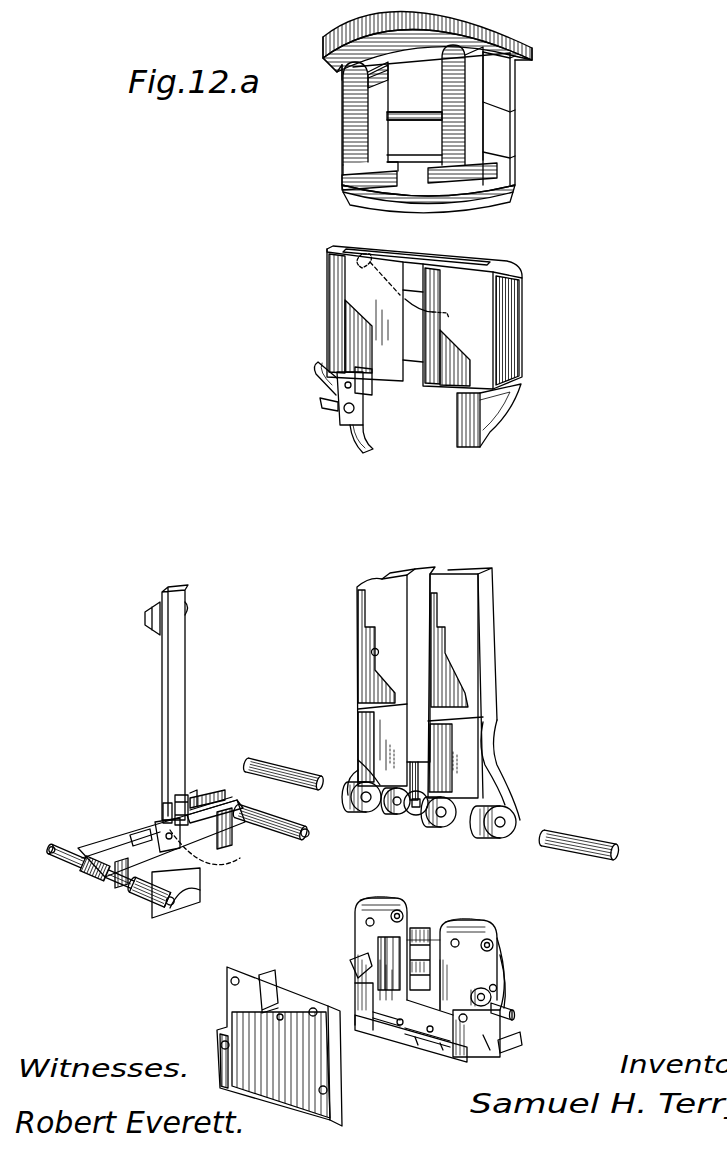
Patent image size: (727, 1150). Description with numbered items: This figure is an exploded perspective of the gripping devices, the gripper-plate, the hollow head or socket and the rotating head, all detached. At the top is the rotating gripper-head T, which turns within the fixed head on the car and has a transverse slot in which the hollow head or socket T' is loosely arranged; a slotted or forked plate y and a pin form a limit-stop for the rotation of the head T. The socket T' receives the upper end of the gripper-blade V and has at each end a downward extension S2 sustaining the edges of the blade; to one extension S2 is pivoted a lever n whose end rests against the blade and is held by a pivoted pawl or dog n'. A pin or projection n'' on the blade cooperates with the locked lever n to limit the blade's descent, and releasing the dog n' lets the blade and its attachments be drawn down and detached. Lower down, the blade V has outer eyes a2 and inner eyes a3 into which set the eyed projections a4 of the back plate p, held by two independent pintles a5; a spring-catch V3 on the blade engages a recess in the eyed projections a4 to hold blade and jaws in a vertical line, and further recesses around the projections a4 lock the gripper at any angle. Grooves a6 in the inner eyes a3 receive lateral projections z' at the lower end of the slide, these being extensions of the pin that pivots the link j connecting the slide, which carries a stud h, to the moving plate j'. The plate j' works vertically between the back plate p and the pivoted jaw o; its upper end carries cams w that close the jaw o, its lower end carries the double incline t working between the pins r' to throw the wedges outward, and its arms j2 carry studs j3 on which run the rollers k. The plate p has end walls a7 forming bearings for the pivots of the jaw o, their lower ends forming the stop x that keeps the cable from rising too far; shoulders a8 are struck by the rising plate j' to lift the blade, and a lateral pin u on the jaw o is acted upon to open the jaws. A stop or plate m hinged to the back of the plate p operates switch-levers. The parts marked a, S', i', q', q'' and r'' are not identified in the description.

The rotating gripper-head T is at (438, 112).
The ring of cap a is at (336, 62).
The rib of cap S' is at (408, 117).
The hollow head or socket T' is at (441, 317).
The lever n is at (328, 407).
The pivoted pawl or dog n' is at (402, 326).
The downward extension S2 is at (320, 401).
The gripper-blade V is at (494, 636).
The pin or projection n'' is at (350, 651).
The stop or spring-catch V3 is at (382, 786).
The outer eyes a2 is at (354, 790).
The inner eyes a3 is at (395, 815).
The grooves a6 is at (416, 815).
The pintles a5 is at (430, 799).
The vertical bar i' is at (181, 702).
The stud h is at (145, 615).
The link j is at (161, 838).
The lateral projections z' is at (166, 788).
The slotted or forked plate y is at (240, 803).
The moving plate j' is at (168, 843).
The arm j2 is at (128, 880).
The journal or stud j3 is at (315, 836).
The rollers or wheels k is at (63, 878).
The double incline t is at (184, 898).
The cam or inclined projection w is at (212, 848).
The stop or plate m is at (268, 975).
The back plate p is at (432, 994).
The eyed projections a4 is at (362, 903).
The lateral pin u is at (380, 940).
The pivoted plate or jaw o is at (423, 934).
The wall a7 is at (503, 966).
The shoulders a8 is at (498, 952).
The hook q' is at (428, 977).
The pin q'' is at (526, 1017).
The projecting stop x is at (505, 1048).
The pins r' is at (412, 1032).
The pin r'' is at (409, 1039).